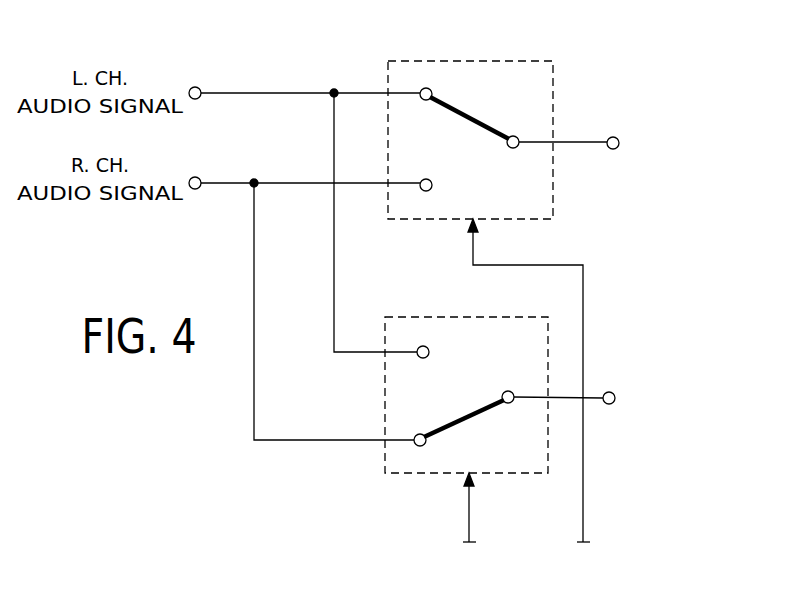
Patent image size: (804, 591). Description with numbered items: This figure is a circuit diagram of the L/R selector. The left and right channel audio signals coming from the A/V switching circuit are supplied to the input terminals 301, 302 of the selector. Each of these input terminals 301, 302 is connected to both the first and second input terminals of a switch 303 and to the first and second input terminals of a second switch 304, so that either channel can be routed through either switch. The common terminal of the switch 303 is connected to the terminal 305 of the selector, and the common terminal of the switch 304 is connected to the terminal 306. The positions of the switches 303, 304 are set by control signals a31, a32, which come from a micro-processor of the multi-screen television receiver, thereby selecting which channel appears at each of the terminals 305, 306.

The input terminal 301 is at (198, 89).
The input terminal 302 is at (198, 179).
The switch 303 is at (415, 58).
The switch 304 is at (462, 316).
The output terminal 305 is at (614, 136).
The output terminal 306 is at (609, 391).
The control signal a31 is at (583, 506).
The control signal a32 is at (470, 508).